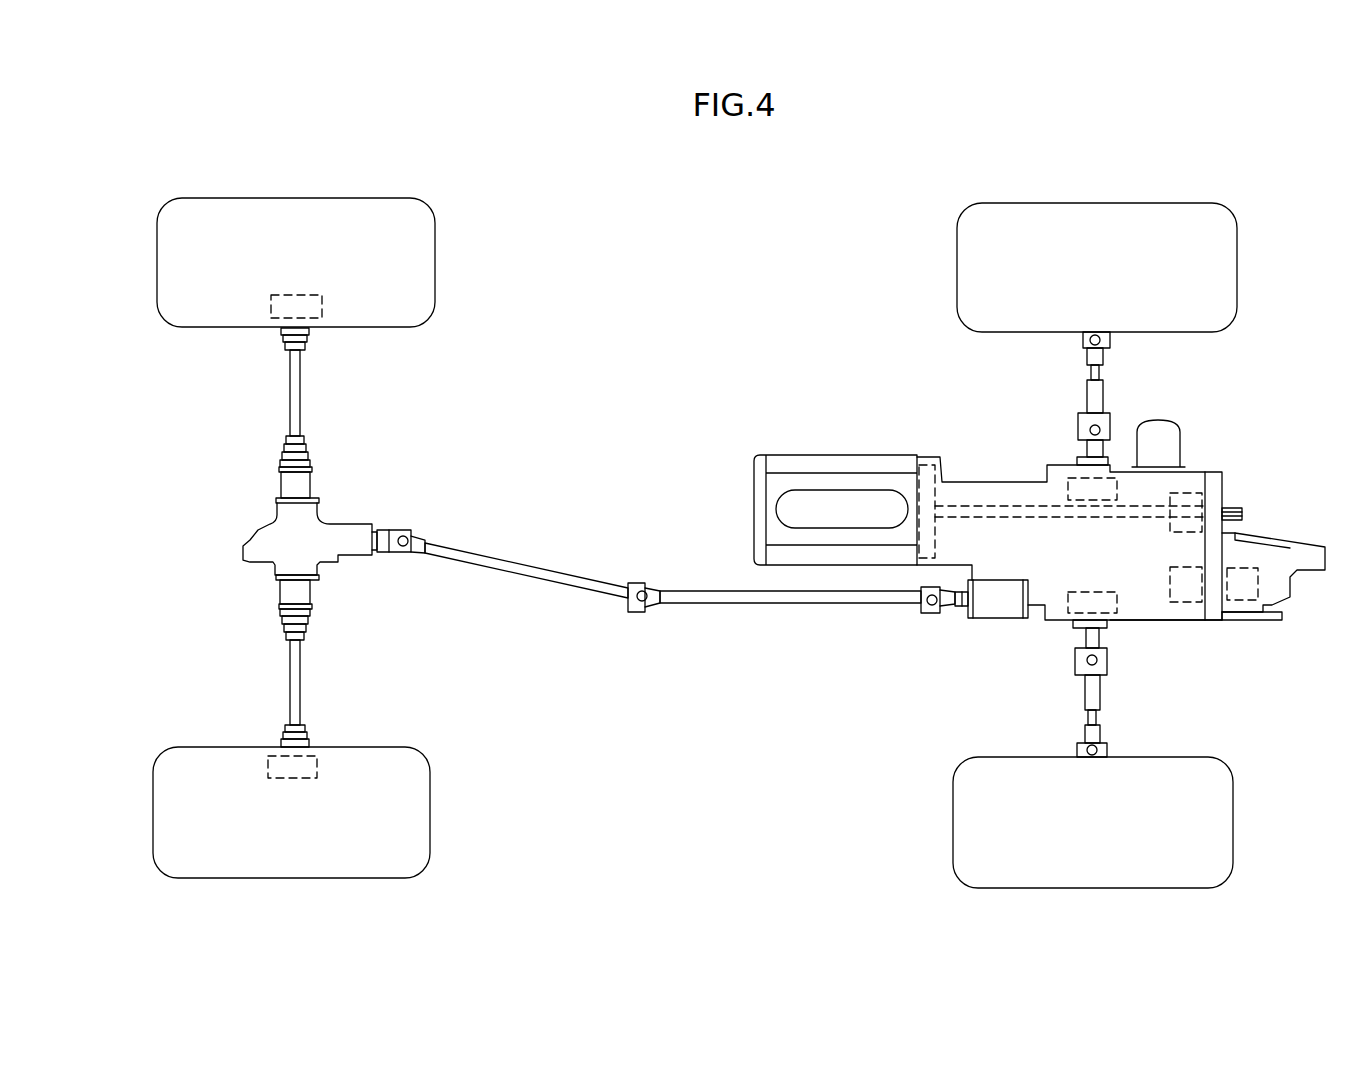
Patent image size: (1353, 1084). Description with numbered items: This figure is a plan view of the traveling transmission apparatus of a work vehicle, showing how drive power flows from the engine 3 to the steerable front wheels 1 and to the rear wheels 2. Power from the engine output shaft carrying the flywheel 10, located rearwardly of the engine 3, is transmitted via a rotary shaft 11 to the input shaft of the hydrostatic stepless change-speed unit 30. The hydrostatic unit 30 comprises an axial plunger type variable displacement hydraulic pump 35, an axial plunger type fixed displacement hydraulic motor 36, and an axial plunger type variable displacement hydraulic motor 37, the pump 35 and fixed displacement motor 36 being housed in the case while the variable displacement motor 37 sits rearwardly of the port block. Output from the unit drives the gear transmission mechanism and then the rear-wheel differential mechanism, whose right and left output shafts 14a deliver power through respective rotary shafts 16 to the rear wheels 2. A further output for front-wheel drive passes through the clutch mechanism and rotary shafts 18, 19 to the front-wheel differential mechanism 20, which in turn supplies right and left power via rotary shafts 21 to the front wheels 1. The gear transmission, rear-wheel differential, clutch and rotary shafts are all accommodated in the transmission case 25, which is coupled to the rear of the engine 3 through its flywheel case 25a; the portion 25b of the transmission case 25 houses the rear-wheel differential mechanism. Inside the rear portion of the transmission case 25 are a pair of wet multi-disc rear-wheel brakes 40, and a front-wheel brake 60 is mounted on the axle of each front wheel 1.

The front wheels 1 is at (425, 273).
The rear wheels 2 is at (967, 271).
The engine 3 is at (846, 460).
The flywheel 10 is at (934, 532).
The rotary shaft 11 is at (1046, 520).
The output shafts 14a is at (1100, 455).
The rotary shafts 16 is at (1088, 372).
The rotary shaft 18 is at (725, 607).
The rotary shaft 19 is at (523, 572).
The front-wheel differential mechanism 20 is at (260, 524).
The rotary shafts 21 is at (301, 395).
The transmission case 25 is at (1013, 482).
The flywheel case 25a is at (942, 480).
The portion of the transmission case 25b is at (1195, 622).
The hydrostatic stepless change-speed unit 30 is at (1272, 532).
The variable displacement hydraulic pump 35 is at (1188, 490).
The fixed displacement hydraulic motor 36 is at (1190, 607).
The variable displacement hydraulic motor 37 is at (1248, 604).
The rear-wheel brakes 40 is at (1082, 592).
The front-wheel brake 60 is at (322, 312).